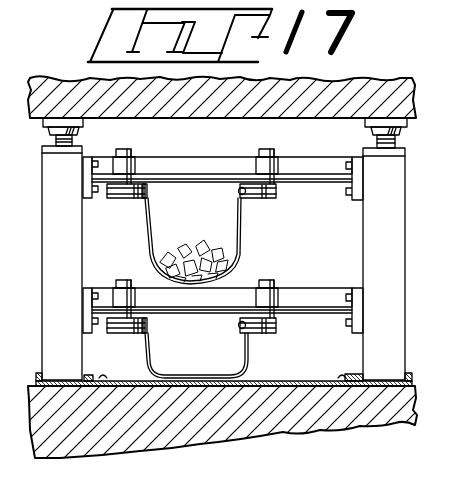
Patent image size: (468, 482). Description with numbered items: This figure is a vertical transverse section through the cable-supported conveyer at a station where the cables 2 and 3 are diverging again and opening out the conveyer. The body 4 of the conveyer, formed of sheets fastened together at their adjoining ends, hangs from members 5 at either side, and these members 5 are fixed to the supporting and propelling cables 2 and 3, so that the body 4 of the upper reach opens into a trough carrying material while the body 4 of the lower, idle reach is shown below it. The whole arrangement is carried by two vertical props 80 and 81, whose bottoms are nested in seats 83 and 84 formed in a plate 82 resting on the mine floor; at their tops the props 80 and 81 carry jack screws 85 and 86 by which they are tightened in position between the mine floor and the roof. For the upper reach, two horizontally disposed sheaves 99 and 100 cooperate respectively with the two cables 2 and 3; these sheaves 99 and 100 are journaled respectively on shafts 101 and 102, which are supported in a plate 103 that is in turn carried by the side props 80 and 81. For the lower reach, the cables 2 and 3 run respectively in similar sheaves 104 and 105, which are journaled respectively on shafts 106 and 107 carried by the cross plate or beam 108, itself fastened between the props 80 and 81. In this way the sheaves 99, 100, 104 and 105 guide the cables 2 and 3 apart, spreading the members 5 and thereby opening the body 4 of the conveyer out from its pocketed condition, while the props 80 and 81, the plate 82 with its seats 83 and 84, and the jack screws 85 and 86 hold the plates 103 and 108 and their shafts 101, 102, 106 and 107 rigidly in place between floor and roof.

The supporting and propelling cable 2 is at (148, 190).
The supporting and propelling cable 3 is at (240, 191).
The body of the conveyer 4 is at (241, 240).
The members 5 is at (150, 330).
The prop 80 is at (44, 279).
The prop 81 is at (364, 240).
The plate 82 is at (309, 378).
The seat 83 is at (66, 378).
The seat 84 is at (388, 378).
The jack screw 85 is at (72, 134).
The jack screw 86 is at (378, 140).
The sheave 99 is at (108, 198).
The sheave 100 is at (273, 198).
The shaft 101 is at (131, 157).
The shaft 102 is at (273, 159).
The plate 103 is at (210, 164).
The sheave 104 is at (110, 334).
The sheave 105 is at (276, 334).
The shaft 106 is at (115, 292).
The shaft 107 is at (278, 298).
The cross plate or beam 108 is at (323, 297).